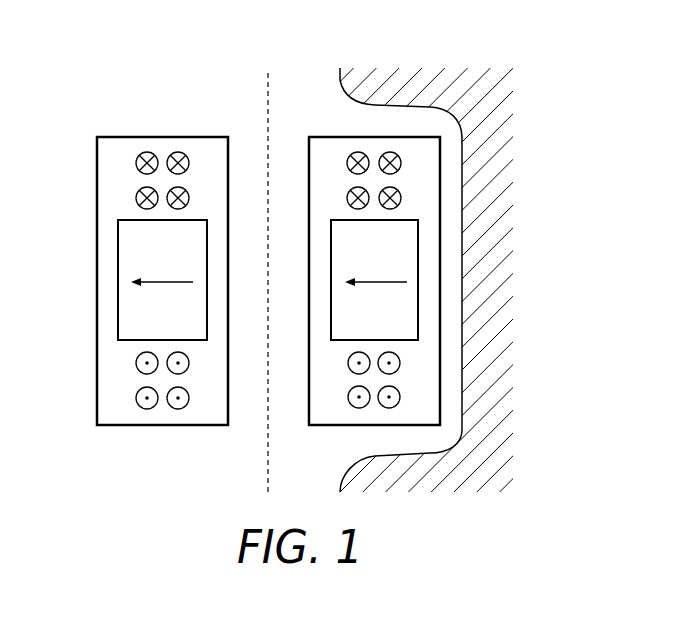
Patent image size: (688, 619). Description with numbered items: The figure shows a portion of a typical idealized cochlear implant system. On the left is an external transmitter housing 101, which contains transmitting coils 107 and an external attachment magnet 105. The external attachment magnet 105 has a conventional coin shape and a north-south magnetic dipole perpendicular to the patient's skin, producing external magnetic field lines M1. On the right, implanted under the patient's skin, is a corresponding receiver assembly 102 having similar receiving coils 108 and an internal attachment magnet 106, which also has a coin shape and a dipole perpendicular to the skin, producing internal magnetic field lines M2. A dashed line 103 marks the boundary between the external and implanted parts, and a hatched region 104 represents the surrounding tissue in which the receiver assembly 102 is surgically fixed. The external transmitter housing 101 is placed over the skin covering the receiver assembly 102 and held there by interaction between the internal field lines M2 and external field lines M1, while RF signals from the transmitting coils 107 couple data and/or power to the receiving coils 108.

The external transmitter housing 101 is at (125, 137).
The receiver assembly 102 is at (315, 137).
The interface / boundary line 103 is at (267, 75).
The wall / hatched medium 104 is at (448, 108).
The external attachment magnet 105 is at (118, 228).
The internal attachment magnet 106 is at (418, 225).
The transmitting coils 107 is at (136, 162).
The receiving coils 108 is at (401, 160).